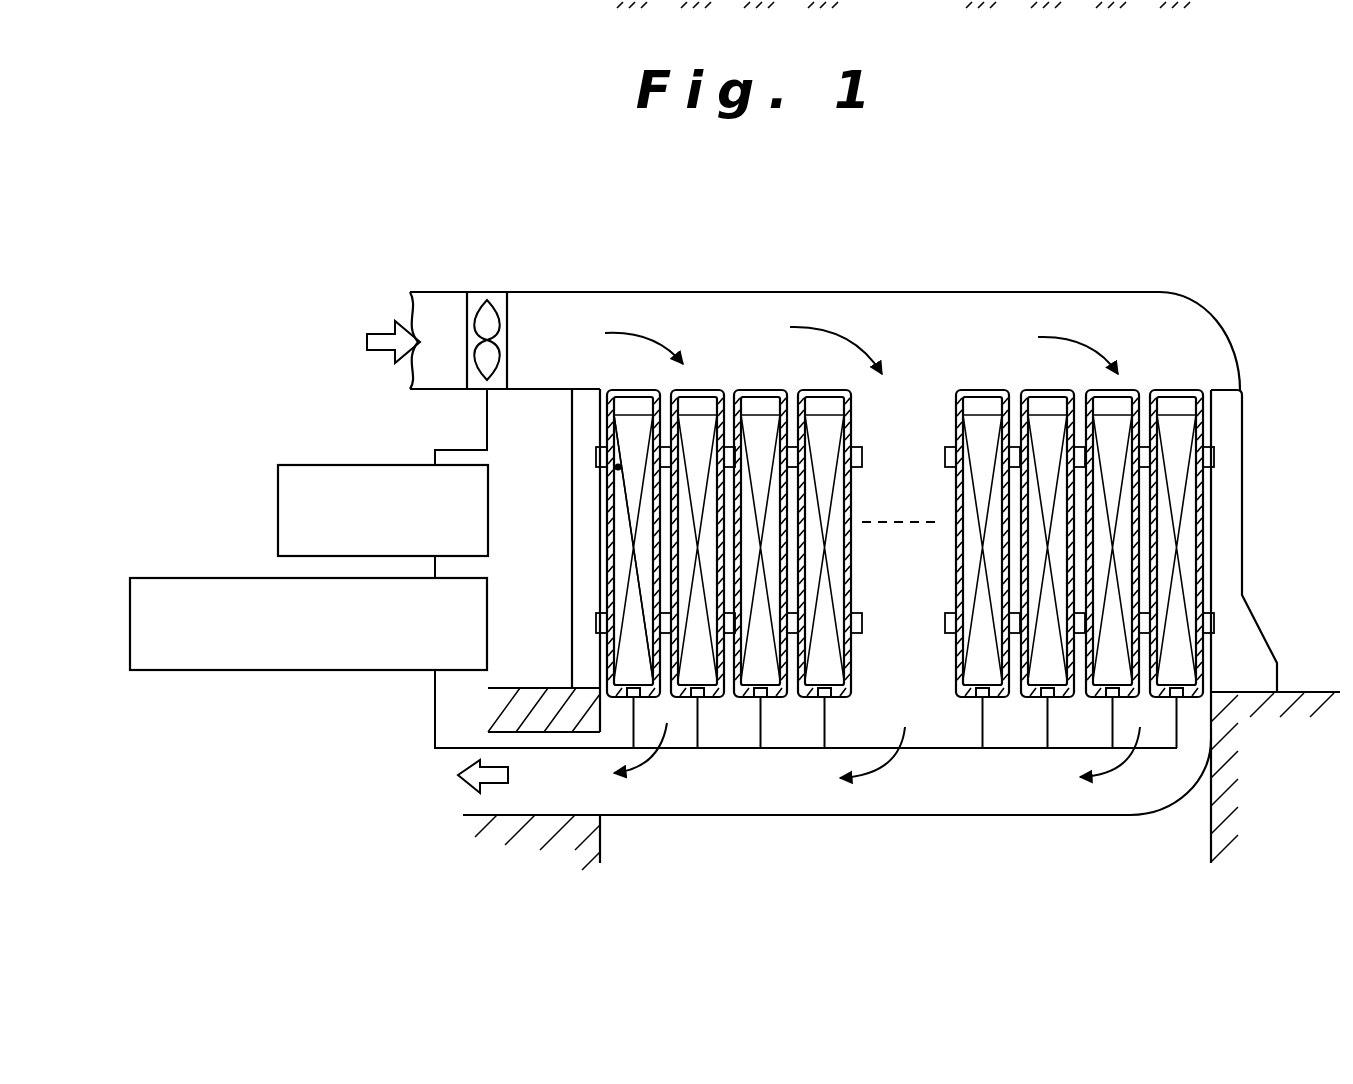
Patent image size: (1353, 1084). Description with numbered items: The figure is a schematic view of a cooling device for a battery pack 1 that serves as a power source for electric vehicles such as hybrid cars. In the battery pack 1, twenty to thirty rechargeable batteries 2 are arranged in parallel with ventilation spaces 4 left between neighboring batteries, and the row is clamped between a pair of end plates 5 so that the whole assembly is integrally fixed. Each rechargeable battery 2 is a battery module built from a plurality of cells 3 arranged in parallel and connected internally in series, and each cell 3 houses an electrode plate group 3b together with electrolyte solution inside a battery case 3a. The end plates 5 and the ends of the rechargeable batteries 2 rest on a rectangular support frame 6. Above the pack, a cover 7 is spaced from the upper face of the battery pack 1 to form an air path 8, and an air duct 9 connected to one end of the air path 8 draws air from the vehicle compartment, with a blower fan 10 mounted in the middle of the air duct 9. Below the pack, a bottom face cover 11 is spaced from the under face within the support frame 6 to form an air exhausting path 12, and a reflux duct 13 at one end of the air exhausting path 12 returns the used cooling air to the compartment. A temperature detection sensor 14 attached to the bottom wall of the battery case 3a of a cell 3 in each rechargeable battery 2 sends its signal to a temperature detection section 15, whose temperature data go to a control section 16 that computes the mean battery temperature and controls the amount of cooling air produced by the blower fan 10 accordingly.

The battery pack 1 is at (975, 386).
The rechargeable battery 2 is at (632, 387).
The cell 3 is at (1186, 454).
The battery case 3a is at (612, 467).
The electrode plate group 3b is at (637, 496).
The ventilation space 4 is at (790, 393).
The end plate 5 is at (577, 620).
The support frame 6 is at (565, 835).
The cover 7 is at (830, 292).
The air path 8 is at (902, 349).
The air duct 9 is at (438, 292).
The blower fan 10 is at (493, 292).
The bottom face cover 11 is at (855, 815).
The air exhausting path 12 is at (918, 799).
The reflux duct 13 is at (492, 817).
The temperature detection sensor 14 is at (637, 700).
The temperature detection section 15 is at (323, 672).
The control section 16 is at (313, 463).